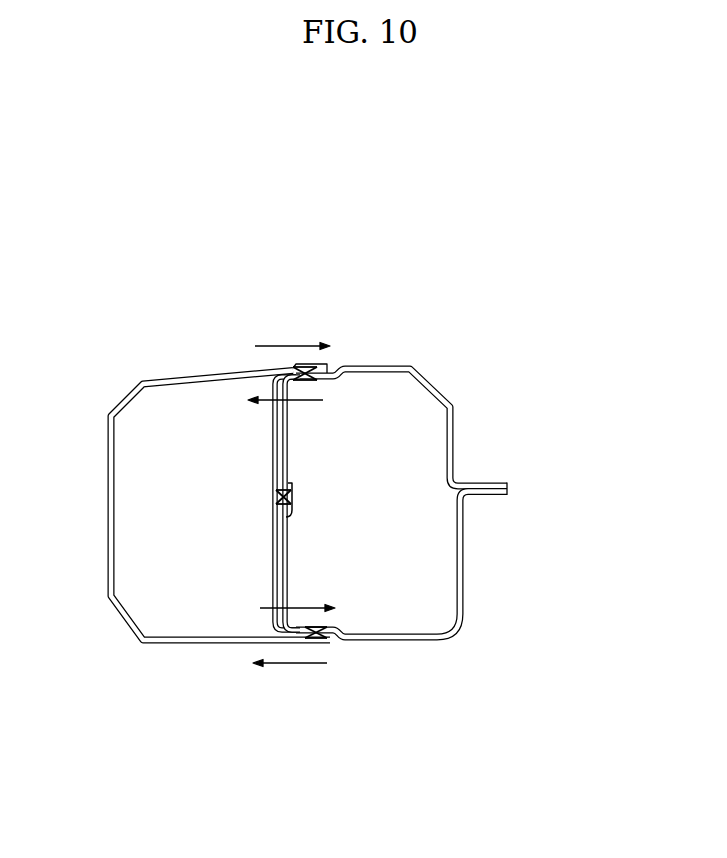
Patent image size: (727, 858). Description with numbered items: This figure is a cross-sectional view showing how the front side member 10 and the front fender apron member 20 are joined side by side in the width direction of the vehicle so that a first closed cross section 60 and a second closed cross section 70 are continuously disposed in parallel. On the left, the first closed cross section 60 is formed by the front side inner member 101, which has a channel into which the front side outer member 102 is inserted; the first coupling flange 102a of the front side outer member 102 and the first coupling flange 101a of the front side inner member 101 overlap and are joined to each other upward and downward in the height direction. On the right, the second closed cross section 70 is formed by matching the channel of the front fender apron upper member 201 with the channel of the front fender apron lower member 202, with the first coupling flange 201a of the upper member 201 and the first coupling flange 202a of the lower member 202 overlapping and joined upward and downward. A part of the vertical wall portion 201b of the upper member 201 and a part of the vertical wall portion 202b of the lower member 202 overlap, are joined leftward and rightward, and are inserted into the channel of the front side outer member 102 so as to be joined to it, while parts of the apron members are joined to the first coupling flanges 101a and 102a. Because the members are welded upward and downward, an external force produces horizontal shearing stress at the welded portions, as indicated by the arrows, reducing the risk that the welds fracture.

The front side member 10 is at (177, 524).
The front fender apron member 20 is at (413, 486).
The first closed cross section 60 is at (191, 503).
The second closed cross section 70 is at (362, 502).
The front side inner member 101 is at (177, 502).
The front side outer member 102 is at (241, 560).
The first coupling flange of the front side inner member 101a is at (289, 319).
The first coupling flange of the front side outer member 102a is at (316, 695).
The front fender apron upper member 201 is at (401, 367).
The front fender apron lower member 202 is at (401, 623).
The first coupling flange of the front fender apron upper member 201a is at (486, 433).
The first coupling flange of the front fender apron lower member 202a is at (493, 552).
The vertical wall portion of the front fender apron upper member 201b is at (350, 625).
The vertical wall portion of the front fender apron lower member 202b is at (336, 417).